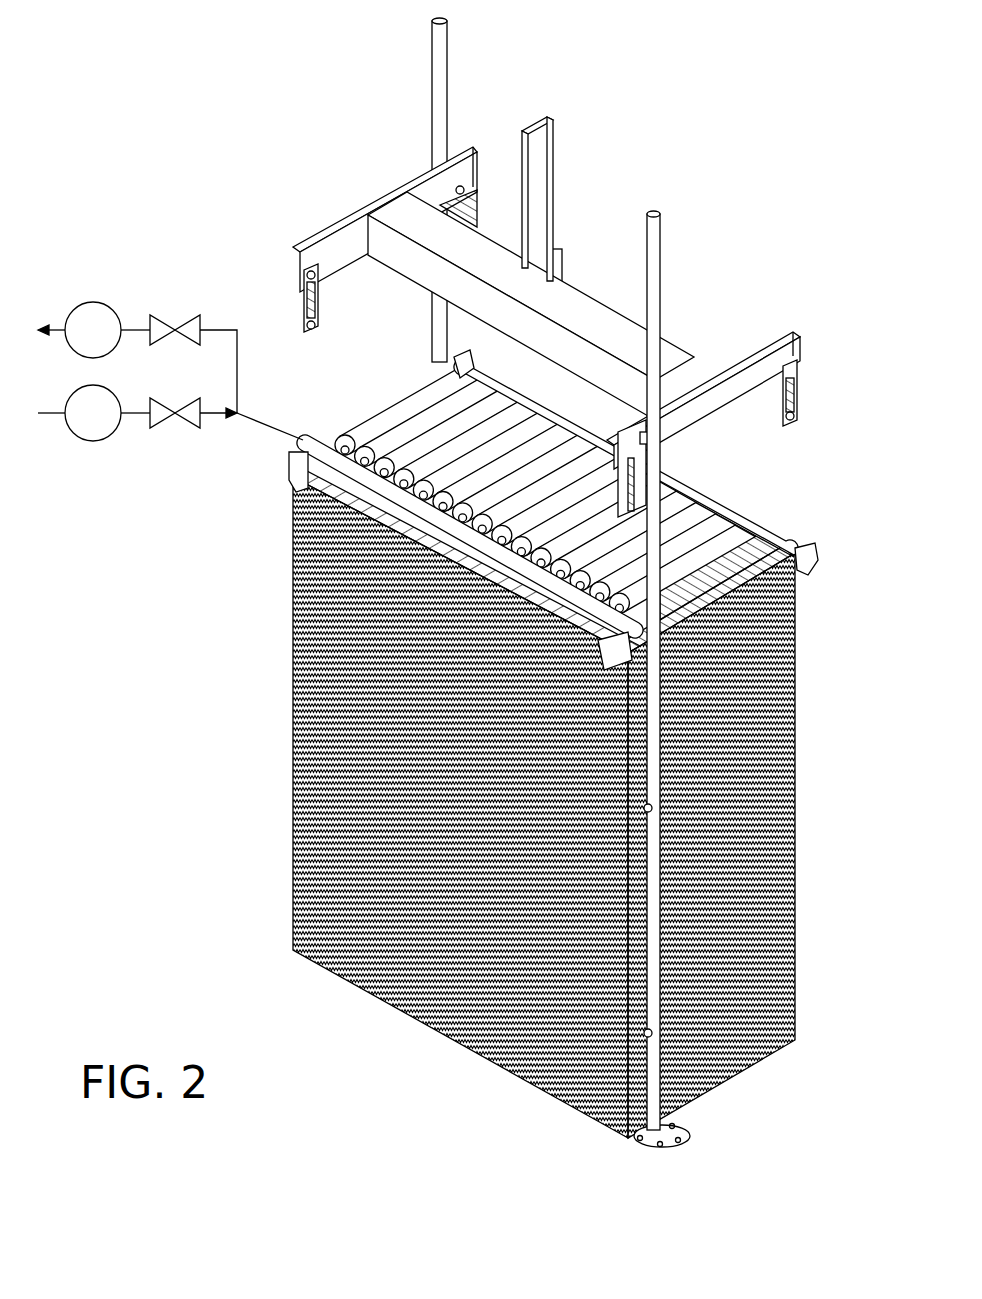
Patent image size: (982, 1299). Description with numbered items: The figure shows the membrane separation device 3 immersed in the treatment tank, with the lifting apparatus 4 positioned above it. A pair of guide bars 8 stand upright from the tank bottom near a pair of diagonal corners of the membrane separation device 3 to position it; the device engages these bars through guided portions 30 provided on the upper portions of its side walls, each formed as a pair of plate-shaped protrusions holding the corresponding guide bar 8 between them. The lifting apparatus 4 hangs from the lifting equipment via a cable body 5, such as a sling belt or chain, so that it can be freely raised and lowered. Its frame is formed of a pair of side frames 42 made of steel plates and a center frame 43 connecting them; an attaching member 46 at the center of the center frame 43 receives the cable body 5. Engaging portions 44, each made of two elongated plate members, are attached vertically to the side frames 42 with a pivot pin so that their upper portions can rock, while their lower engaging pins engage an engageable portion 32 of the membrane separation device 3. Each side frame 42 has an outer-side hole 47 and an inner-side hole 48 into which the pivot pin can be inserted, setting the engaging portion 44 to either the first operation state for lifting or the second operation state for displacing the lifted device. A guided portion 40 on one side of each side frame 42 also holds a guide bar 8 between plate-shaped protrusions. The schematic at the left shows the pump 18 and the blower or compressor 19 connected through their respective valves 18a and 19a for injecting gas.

The membrane separation device 3 is at (797, 888).
The lifting apparatus 4 is at (551, 317).
The cable body 5 is at (557, 158).
The guide bars 8 is at (447, 57).
The pump 18 is at (93, 302).
The valve 18a is at (160, 314).
The blower or compressor 19 is at (93, 443).
The valve 19a is at (158, 430).
The guided portions 30 is at (652, 808).
The engageable portion 32 is at (285, 474).
The guided portion 40 is at (662, 437).
The side frames 42 is at (318, 226).
The center frame 43 is at (690, 356).
The engaging portions 44 is at (300, 305).
The attaching member 46 is at (562, 252).
The outer-side hole 47 is at (797, 372).
The inner-side hole 48 is at (785, 398).